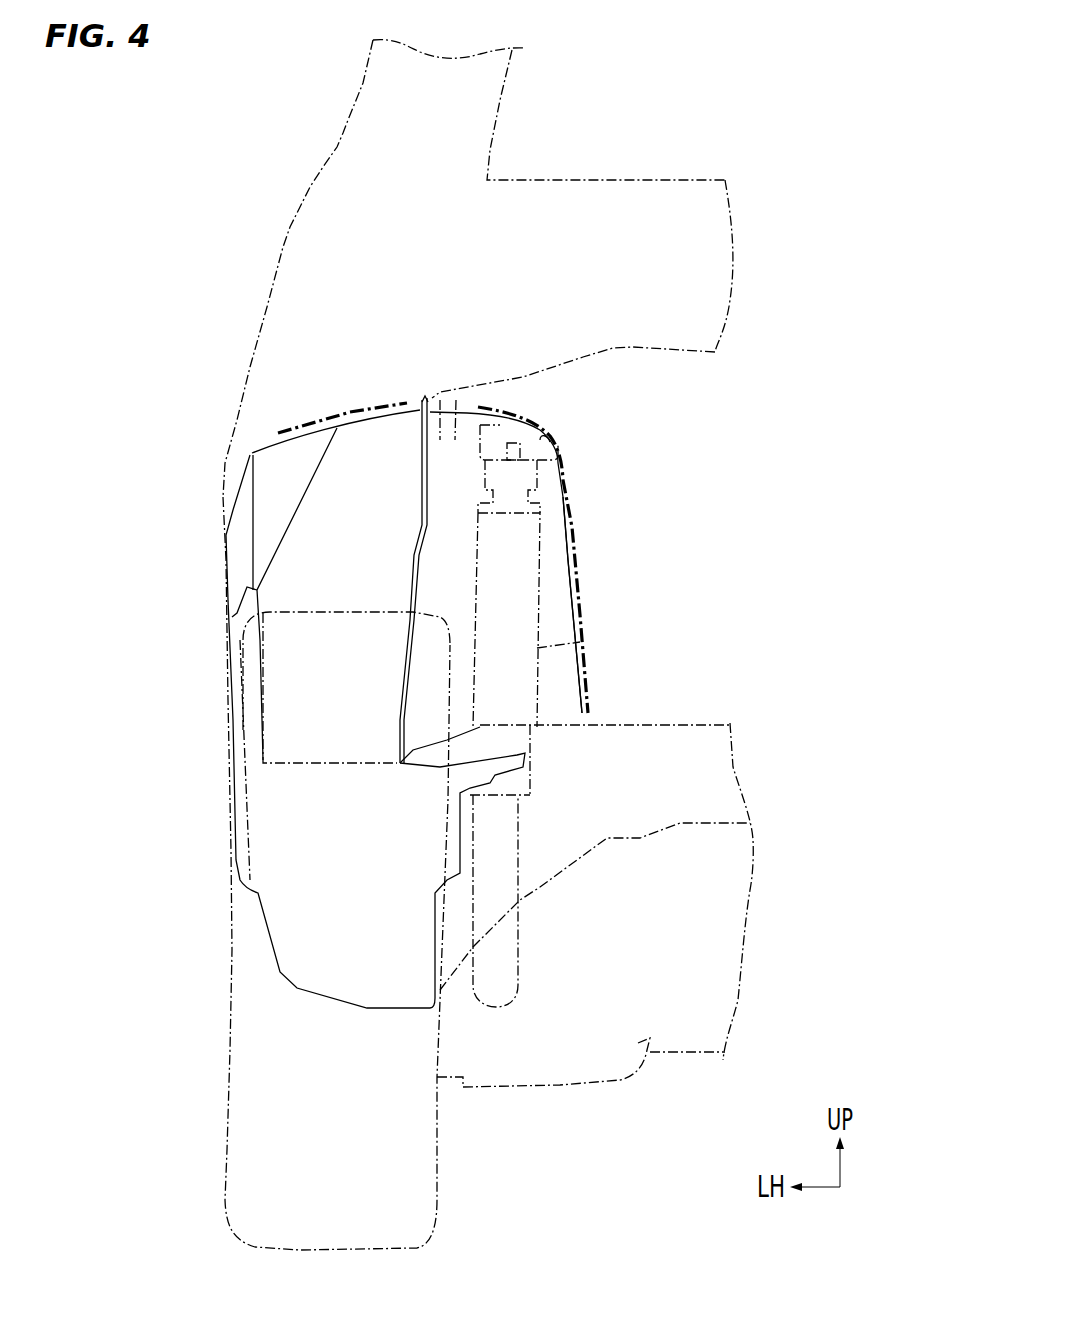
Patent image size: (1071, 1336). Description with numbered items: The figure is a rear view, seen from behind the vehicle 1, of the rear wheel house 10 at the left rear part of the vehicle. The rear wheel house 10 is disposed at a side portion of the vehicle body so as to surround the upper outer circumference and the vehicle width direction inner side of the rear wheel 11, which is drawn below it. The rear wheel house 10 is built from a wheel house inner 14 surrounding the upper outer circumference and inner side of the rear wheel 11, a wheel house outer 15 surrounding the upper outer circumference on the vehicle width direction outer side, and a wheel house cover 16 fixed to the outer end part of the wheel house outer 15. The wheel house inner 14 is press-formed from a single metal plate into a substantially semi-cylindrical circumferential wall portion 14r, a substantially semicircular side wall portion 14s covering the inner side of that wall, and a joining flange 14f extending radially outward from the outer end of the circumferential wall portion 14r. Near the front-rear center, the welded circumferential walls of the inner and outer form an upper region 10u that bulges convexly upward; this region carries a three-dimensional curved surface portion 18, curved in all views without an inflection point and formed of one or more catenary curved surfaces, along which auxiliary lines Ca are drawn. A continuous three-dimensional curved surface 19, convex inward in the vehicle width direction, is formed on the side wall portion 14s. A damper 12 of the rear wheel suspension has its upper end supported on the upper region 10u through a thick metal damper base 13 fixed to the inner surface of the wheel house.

The vehicle 1 is at (700, 80).
The rear wheel house 10 is at (285, 400).
The upper region 10u is at (385, 430).
The rear wheel 11 is at (318, 610).
The damper 12 is at (583, 643).
The damper base 13 is at (492, 443).
The wheel house inner 14 is at (523, 415).
The joining flange 14f is at (386, 432).
The circumferential wall portion 14r is at (448, 440).
The side wall portion 14s is at (585, 692).
The wheel house outer 15 is at (308, 420).
The wheel house cover 16 is at (220, 508).
The three-dimensional curved surface portion 18 is at (540, 440).
The three-dimensional curved surface 19 is at (575, 593).
The auxiliary line Ca is at (348, 397).